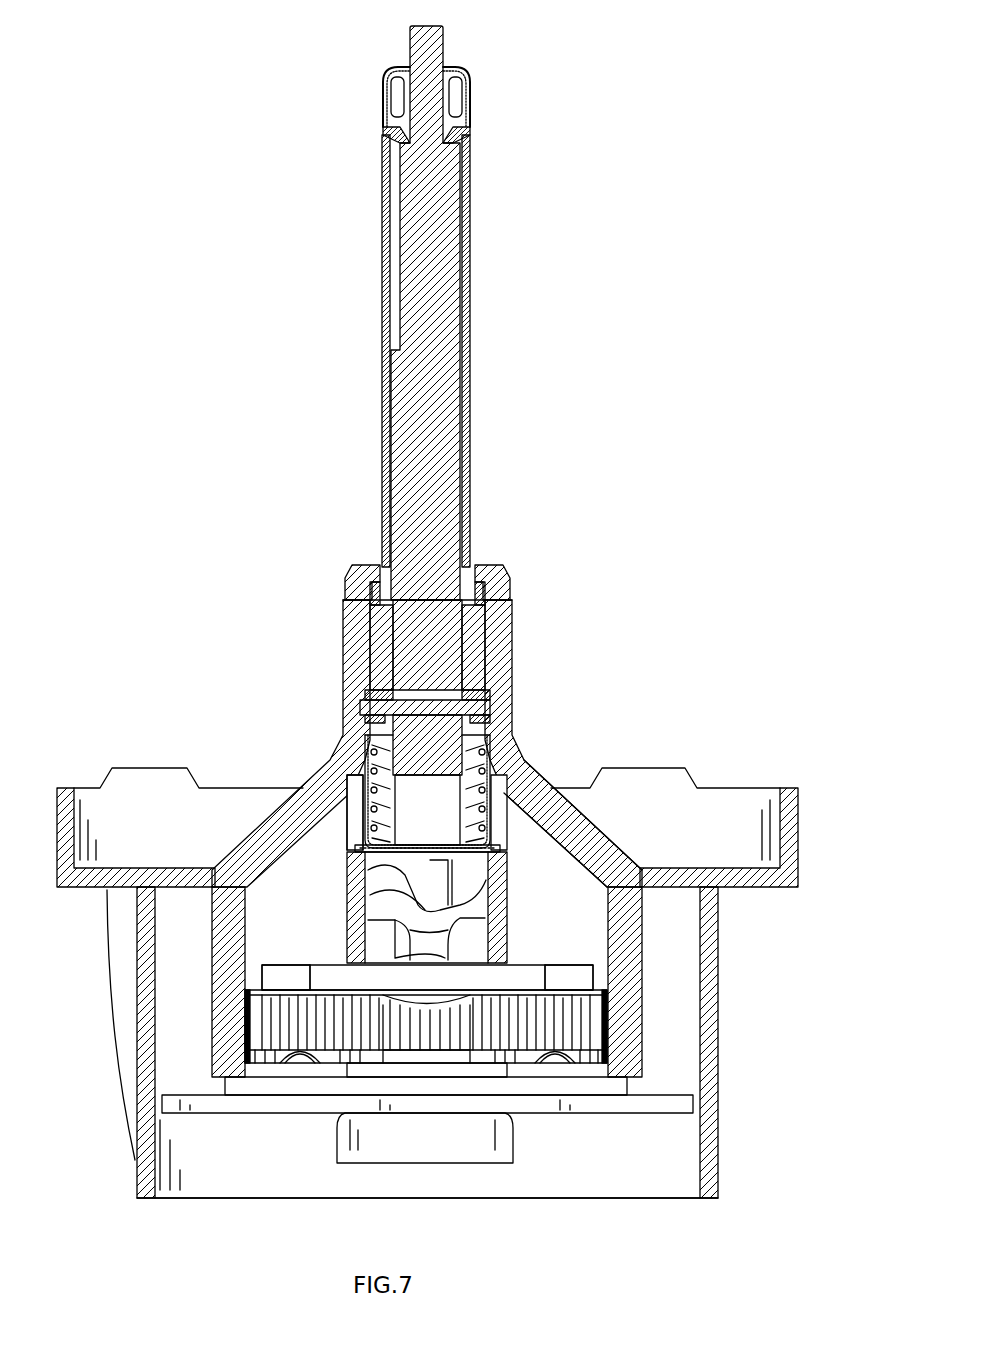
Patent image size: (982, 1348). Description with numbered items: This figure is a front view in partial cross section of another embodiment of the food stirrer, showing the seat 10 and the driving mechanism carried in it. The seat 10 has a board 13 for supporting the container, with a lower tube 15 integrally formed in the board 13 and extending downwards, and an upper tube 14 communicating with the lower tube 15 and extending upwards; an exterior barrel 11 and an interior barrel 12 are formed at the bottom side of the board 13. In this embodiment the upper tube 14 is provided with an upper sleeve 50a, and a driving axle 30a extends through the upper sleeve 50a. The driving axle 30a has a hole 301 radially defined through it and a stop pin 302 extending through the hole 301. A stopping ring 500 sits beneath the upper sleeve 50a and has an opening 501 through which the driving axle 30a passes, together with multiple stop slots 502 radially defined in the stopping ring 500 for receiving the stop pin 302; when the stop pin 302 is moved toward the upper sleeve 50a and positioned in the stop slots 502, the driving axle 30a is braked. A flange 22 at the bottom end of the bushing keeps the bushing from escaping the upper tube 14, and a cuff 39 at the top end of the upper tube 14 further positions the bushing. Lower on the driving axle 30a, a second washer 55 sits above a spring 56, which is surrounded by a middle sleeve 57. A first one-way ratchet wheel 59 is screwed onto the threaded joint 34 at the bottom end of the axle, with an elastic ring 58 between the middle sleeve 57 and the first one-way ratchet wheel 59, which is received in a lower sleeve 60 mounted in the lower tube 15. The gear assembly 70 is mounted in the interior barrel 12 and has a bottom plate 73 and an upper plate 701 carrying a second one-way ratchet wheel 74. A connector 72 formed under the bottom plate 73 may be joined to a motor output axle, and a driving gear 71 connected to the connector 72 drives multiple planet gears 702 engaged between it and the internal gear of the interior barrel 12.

The seat 10 is at (738, 1026).
The exterior barrel 11 is at (710, 1125).
The interior barrel 12 is at (625, 928).
The board 13 is at (740, 870).
The upper tube 14 is at (500, 625).
The lower tube 15 is at (580, 843).
The flange 22 is at (372, 591).
The driving axle 30a is at (437, 300).
The threaded joint 34 is at (370, 905).
The cuff 39 is at (482, 565).
The upper sleeve 50a is at (470, 618).
The second washer 55 is at (498, 757).
The spring 56 is at (420, 838).
The middle sleeve 57 is at (360, 800).
The elastic ring 58 is at (376, 760).
The first one-way ratchet wheel 59 is at (355, 850).
The lower sleeve 60 is at (497, 912).
The gear assembly 70 is at (242, 1016).
The driving gear 71 is at (440, 1062).
The connector 72 is at (490, 1152).
The bottom plate 73 is at (665, 1100).
The second one-way ratchet wheel 74 is at (365, 968).
The hole 301 is at (395, 672).
The stop pin 302 is at (472, 660).
The stopping ring 500 is at (487, 706).
The opening 501 is at (498, 692).
The stop slots 502 is at (490, 716).
The upper plate 701 is at (530, 975).
The planet gears 702 is at (290, 1050).